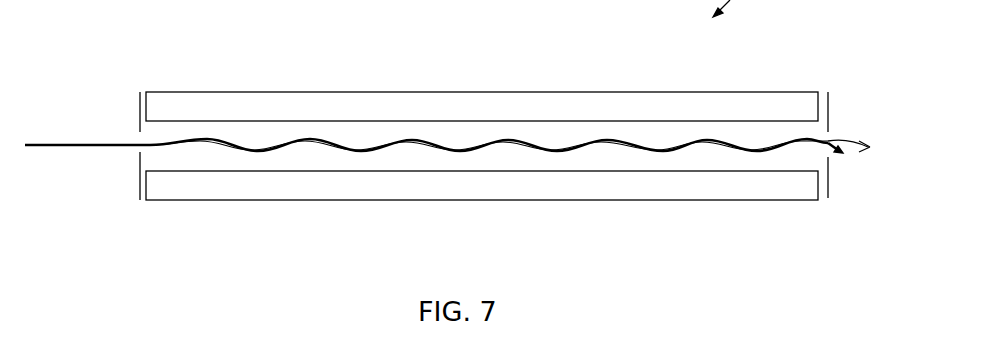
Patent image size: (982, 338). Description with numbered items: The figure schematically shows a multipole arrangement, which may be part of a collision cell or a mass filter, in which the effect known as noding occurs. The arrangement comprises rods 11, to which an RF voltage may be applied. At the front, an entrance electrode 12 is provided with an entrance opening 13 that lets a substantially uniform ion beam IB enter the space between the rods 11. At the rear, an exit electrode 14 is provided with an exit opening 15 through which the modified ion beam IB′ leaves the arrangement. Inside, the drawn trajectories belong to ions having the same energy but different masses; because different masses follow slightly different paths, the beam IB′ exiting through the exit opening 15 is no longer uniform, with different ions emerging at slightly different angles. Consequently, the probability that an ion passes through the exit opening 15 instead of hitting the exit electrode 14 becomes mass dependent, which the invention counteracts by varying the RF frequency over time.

The rods 11 is at (255, 91).
The entrance electrode 12 is at (138, 175).
The entrance opening 13 is at (135, 140).
The exit electrode 14 is at (828, 182).
The exit opening 15 is at (837, 131).
The ion beam IB is at (78, 148).
The modified ion beam IB′ is at (850, 140).